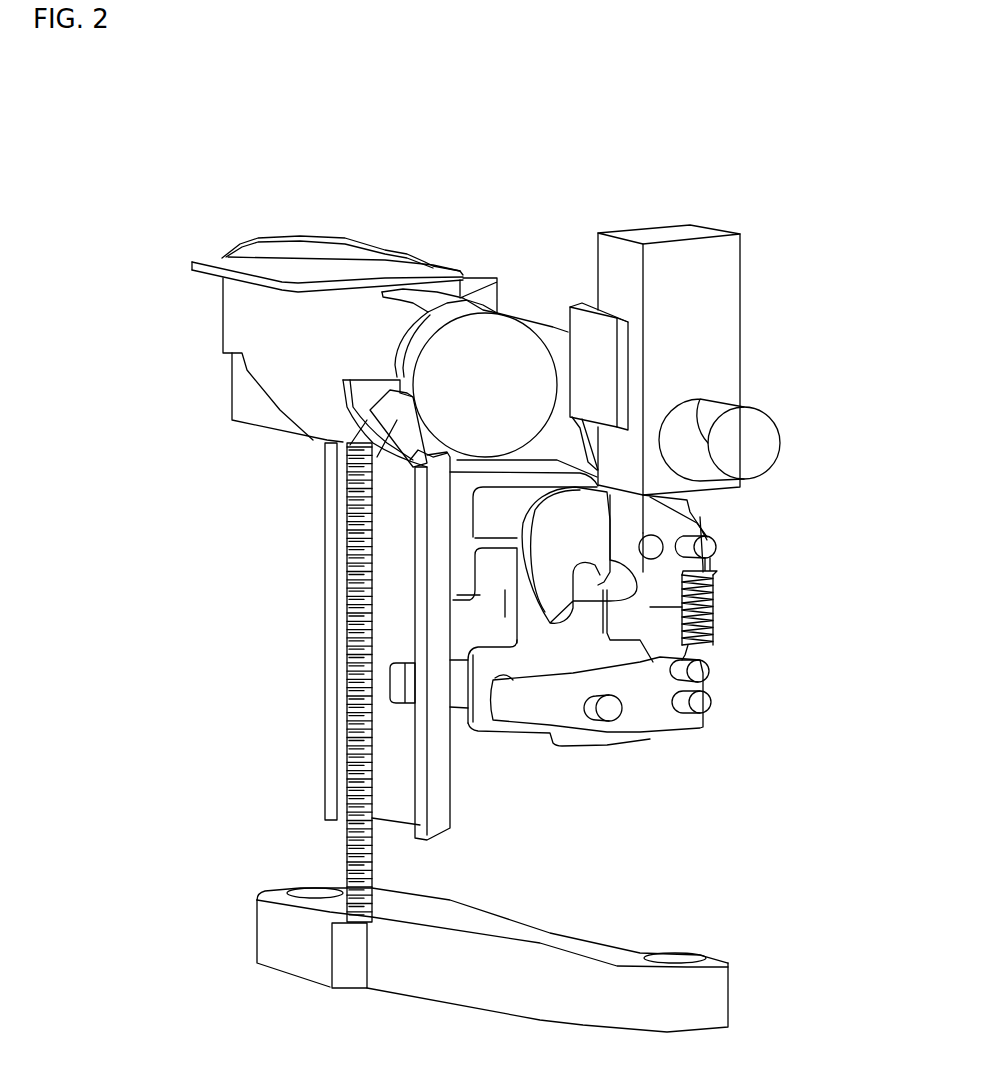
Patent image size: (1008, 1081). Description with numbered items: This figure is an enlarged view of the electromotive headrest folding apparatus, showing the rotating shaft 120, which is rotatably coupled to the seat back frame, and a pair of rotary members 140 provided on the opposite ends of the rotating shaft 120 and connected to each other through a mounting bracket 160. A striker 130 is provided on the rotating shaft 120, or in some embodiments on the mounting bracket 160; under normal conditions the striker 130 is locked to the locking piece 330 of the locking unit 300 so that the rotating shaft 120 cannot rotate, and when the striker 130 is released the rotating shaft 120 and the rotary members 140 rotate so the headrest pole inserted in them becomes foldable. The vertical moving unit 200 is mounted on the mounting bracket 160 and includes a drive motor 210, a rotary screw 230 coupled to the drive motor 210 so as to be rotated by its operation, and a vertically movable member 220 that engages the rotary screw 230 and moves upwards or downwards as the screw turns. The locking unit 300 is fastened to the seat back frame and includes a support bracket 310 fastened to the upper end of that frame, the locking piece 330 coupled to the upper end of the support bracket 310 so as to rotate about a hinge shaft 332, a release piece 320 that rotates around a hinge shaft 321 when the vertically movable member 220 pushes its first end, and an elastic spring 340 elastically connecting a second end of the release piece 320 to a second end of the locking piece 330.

The rotating shaft 120 is at (745, 437).
The striker 130 is at (622, 514).
The rotary members 140 is at (718, 296).
The mounting bracket 160 is at (553, 338).
The vertical moving unit 200 is at (190, 522).
The drive motor 210 is at (328, 486).
The vertically movable member 220 is at (283, 893).
The rotary screw 230 is at (350, 648).
The locking unit 300 is at (737, 725).
The support bracket 310 is at (537, 633).
The release piece 320 is at (647, 680).
The hinge shaft 321 is at (613, 710).
The locking piece 330 is at (708, 626).
The hinge shaft 332 is at (708, 547).
The elastic spring 340 is at (712, 590).